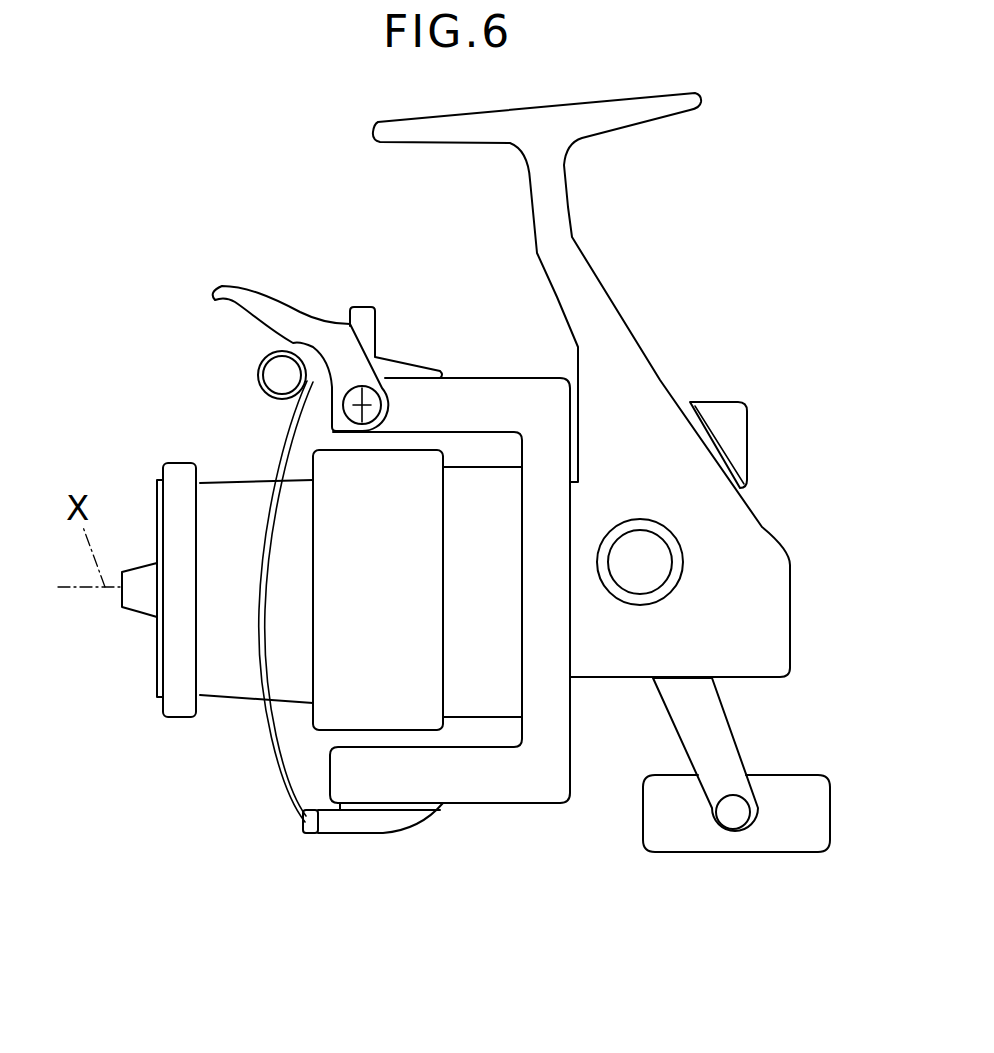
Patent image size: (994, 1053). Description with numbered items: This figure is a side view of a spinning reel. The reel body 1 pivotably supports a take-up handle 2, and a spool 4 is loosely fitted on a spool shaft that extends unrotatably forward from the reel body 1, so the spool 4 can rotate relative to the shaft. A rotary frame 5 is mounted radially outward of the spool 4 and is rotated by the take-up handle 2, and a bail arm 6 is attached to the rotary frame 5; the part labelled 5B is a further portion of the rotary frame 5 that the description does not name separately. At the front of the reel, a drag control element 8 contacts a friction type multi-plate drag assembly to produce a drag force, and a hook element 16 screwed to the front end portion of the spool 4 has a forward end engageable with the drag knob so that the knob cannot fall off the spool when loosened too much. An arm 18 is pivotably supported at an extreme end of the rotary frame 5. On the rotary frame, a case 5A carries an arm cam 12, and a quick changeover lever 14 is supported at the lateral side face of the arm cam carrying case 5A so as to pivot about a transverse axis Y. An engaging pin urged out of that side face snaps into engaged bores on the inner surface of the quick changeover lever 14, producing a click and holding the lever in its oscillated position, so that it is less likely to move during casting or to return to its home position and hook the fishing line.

The reel body 1 is at (763, 523).
The take-up handle 2 is at (733, 732).
The spool 4 is at (228, 703).
The rotary frame 5 is at (570, 722).
The arm cam carrying case 5A is at (482, 376).
The lower arm of rotor 5B is at (467, 805).
The bail arm 6 is at (283, 437).
The drag control element 8 is at (132, 608).
The arm cam 12 is at (260, 363).
The quick changeover lever 14 is at (275, 297).
The hook element 16 is at (160, 683).
The arm 18 is at (355, 837).
The transverse axis Y is at (372, 405).